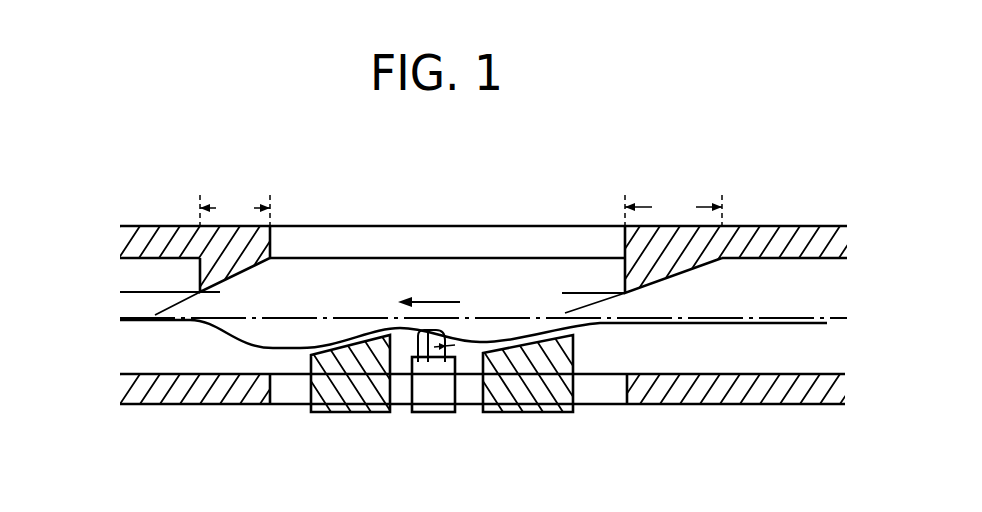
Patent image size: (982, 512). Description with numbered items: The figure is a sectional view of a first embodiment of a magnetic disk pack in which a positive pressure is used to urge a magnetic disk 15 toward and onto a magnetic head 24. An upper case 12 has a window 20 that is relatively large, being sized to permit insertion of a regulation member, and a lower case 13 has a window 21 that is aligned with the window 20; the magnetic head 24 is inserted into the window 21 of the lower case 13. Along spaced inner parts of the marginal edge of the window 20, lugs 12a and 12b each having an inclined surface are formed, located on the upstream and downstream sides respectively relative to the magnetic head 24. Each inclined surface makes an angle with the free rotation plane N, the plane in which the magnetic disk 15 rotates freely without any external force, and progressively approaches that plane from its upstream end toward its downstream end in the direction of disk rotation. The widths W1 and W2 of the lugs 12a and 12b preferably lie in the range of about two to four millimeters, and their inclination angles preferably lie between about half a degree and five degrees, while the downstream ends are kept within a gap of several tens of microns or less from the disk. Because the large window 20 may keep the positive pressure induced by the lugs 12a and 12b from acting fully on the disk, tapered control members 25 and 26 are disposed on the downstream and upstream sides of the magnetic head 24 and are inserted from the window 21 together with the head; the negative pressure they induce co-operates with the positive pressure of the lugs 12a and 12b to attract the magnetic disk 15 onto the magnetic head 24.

The upper case 12 is at (160, 226).
The lug 12a is at (662, 277).
The lug 12b is at (232, 274).
The lower case 13 is at (225, 404).
The magnetic disk 15 is at (670, 323).
The window 20 is at (572, 236).
The window 21 is at (605, 398).
The magnetic head 24 is at (433, 370).
The tapered control member 25 is at (348, 412).
The tapered control member 26 is at (520, 412).
The free rotation plane N is at (784, 318).
The width of lug 12a W1 is at (673, 210).
The width of lug 12b W2 is at (235, 210).